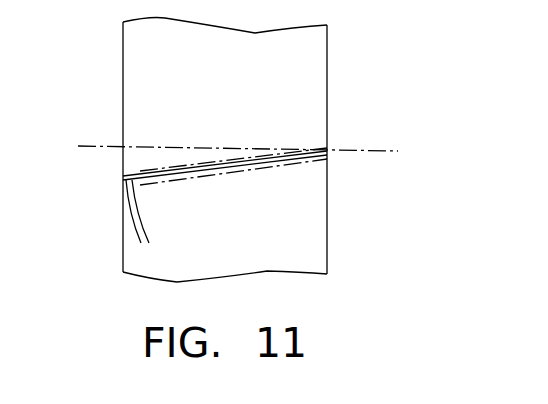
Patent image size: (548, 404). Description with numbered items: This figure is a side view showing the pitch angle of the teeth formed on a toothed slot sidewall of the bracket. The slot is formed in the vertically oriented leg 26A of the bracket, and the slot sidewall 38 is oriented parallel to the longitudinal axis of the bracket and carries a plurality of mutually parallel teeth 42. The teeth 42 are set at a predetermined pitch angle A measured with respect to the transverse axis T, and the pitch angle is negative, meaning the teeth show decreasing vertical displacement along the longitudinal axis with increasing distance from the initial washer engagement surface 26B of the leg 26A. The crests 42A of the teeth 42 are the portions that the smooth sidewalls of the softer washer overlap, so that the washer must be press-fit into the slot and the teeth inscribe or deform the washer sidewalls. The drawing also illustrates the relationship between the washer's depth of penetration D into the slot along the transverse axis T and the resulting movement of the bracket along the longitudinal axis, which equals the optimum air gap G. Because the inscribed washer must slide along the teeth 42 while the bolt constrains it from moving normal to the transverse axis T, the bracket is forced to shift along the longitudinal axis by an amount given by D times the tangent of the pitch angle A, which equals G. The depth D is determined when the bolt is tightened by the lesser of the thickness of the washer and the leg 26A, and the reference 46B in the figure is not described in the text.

The leg 26A is at (123, 235).
The initial washer engagement surface 26B is at (327, 43).
The slot sidewall 38 is at (304, 224).
The teeth 42 is at (182, 173).
The crests 42A is at (238, 164).
The slot 46B is at (144, 182).
The air gap G is at (123, 158).
The transverse axis T is at (196, 147).
The pitch angle A is at (144, 147).
The depth of penetration D is at (327, 72).